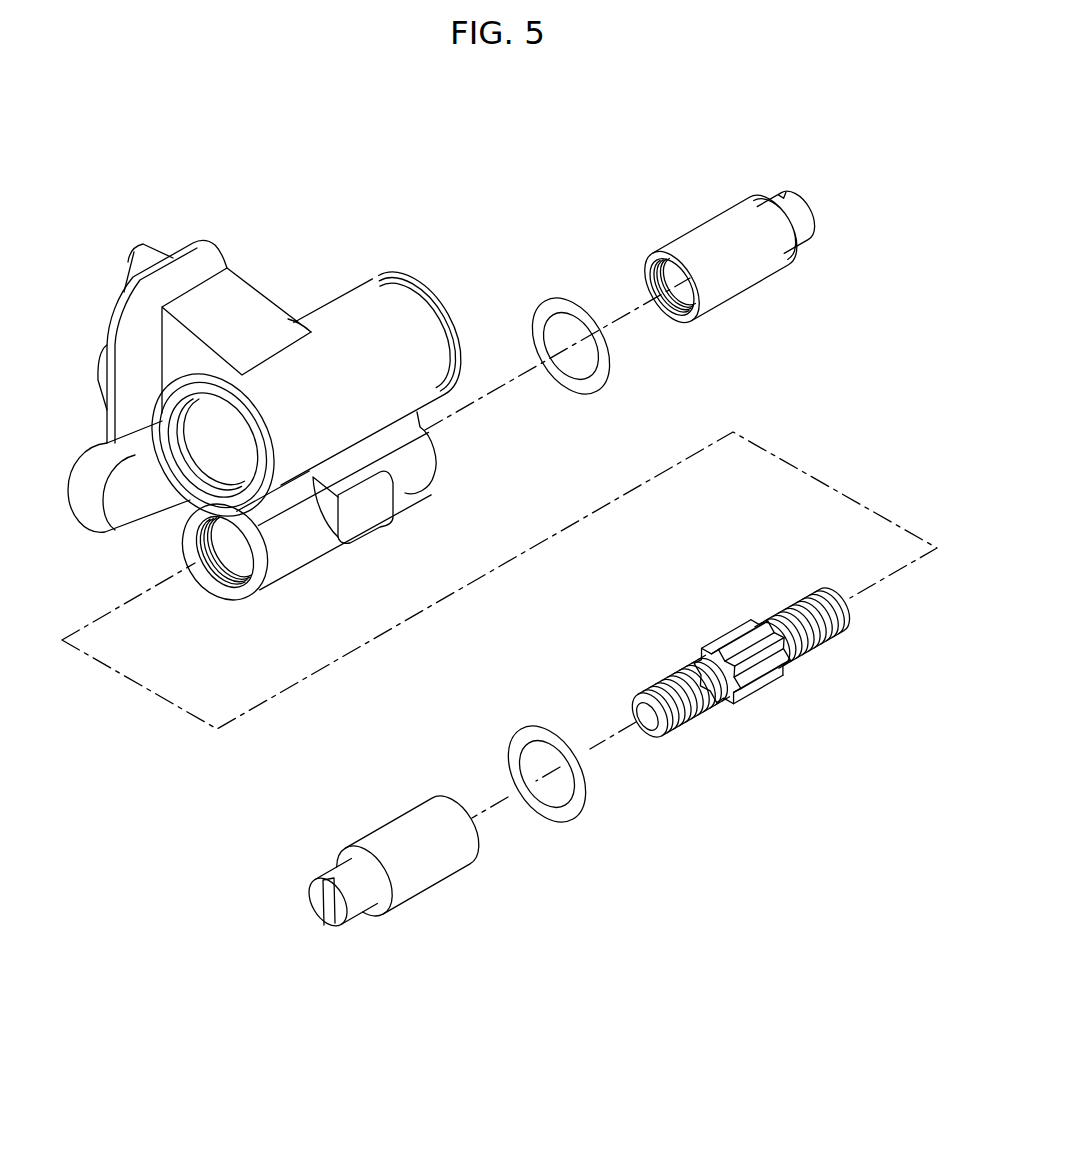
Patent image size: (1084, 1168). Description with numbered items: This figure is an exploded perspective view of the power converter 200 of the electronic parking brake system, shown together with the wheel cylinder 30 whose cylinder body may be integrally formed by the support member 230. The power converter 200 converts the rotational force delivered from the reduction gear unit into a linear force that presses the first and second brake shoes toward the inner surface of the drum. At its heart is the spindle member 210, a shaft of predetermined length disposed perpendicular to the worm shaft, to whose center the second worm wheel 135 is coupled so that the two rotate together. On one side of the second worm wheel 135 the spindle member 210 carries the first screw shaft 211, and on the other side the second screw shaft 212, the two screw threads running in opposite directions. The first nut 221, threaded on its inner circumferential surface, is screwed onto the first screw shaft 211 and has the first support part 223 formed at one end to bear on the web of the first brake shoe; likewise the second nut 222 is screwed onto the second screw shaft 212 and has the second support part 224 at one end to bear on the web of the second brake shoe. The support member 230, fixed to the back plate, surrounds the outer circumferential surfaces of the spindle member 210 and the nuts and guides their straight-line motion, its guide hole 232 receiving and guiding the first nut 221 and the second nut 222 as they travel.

The wheel cylinder 30 is at (276, 411).
The power converter 200 is at (499, 568).
The spindle member 210 is at (741, 661).
The first screw shaft 211 is at (672, 688).
The second screw shaft 212 is at (815, 598).
The second worm wheel 135 is at (733, 637).
The first nut 221 is at (349, 842).
The second nut 222 is at (764, 239).
The first support part 223 is at (303, 896).
The second support part 224 is at (802, 222).
The support member 230 is at (290, 548).
The guide hole 232 is at (223, 538).